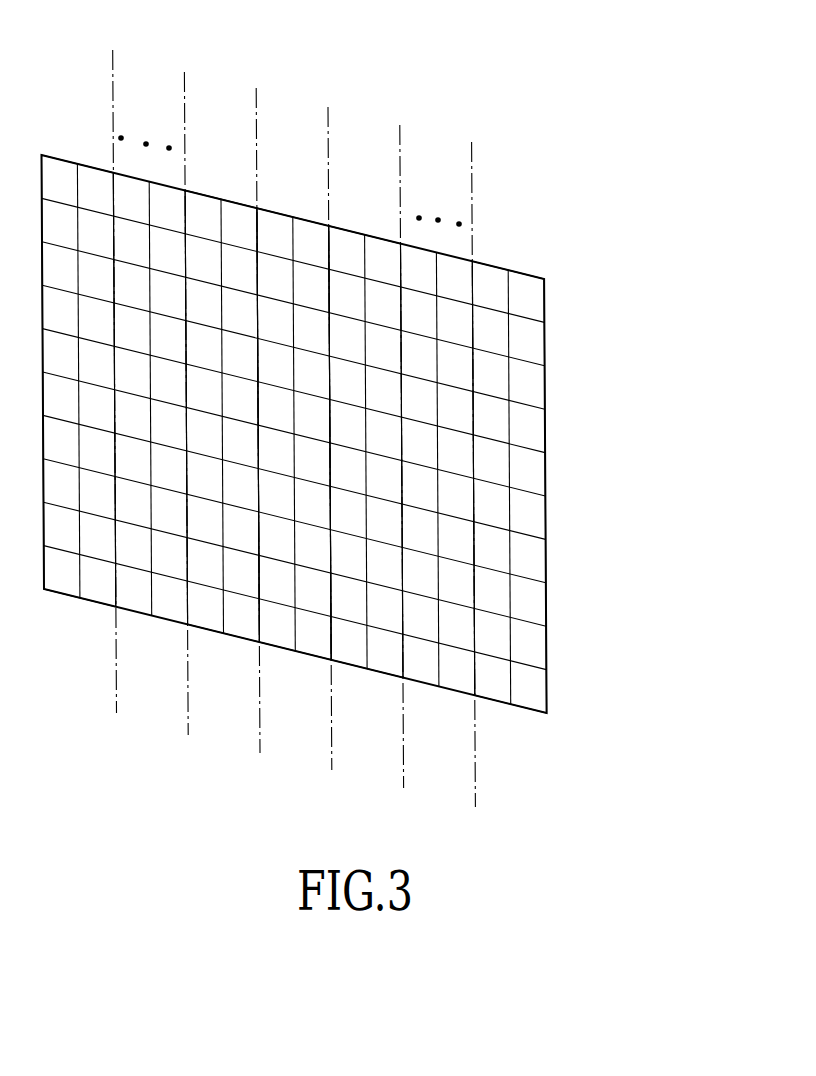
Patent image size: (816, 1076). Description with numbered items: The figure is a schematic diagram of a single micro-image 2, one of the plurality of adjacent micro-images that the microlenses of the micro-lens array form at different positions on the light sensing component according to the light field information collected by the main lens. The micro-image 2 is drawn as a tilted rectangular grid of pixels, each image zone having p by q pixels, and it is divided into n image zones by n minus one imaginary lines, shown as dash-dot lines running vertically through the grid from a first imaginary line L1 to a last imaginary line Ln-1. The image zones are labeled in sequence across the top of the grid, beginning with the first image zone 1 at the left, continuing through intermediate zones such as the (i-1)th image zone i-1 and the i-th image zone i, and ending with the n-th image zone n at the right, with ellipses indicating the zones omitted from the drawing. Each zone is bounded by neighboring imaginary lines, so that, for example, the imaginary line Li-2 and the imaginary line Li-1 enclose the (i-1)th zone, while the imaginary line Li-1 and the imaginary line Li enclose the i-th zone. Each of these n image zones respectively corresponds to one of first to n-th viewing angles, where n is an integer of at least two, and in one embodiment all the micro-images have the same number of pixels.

The micro-image 2 is at (586, 377).
The first image zone 1 is at (79, 359).
The (i-1)th image zone i-1 is at (222, 396).
The i-th image zone i is at (294, 415).
The n-th image zone n is at (509, 466).
The first imaginary line L1 is at (120, 361).
The (i-2)th imaginary line Li-2 is at (195, 384).
The (i-1)th imaginary line Li-1 is at (264, 402).
The i-th imaginary line Li is at (328, 419).
The (n-1)th imaginary line Ln-1 is at (481, 457).